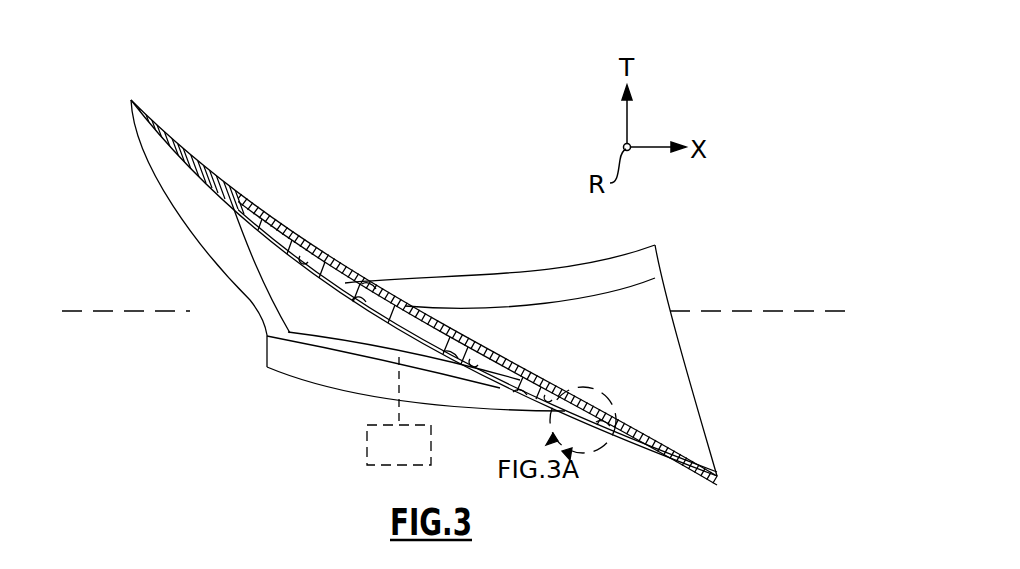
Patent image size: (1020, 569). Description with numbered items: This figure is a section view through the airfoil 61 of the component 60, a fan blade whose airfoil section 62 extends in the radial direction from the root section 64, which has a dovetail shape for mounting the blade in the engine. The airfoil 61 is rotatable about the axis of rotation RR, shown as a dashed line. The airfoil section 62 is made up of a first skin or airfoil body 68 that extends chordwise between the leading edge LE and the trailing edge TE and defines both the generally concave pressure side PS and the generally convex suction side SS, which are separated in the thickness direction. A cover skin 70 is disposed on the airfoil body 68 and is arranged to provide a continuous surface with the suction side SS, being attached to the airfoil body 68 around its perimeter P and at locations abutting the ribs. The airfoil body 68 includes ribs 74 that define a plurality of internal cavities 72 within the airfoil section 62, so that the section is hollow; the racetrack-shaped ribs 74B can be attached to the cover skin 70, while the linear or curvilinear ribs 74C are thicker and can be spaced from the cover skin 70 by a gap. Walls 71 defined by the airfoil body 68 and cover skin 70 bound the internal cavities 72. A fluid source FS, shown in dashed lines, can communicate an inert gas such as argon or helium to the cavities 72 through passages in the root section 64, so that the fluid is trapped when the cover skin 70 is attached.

The component 60 is at (170, 82).
The airfoil 61 is at (122, 123).
The airfoil section 62 is at (147, 189).
The root section 64 is at (255, 360).
The airfoil body 68 is at (231, 196).
The cover skin 70 is at (245, 237).
The walls 71 is at (311, 236).
The internal cavity 72 is at (318, 270).
The ribs 74 is at (360, 303).
The ribs 74B is at (367, 283).
The ribs 74C is at (447, 350).
The pressure side PS is at (291, 232).
The suction side SS is at (238, 272).
The leading edge LE is at (205, 246).
The trailing edge TE is at (700, 417).
The perimeter P is at (254, 304).
The axis of rotation RR is at (790, 311).
The fluid source FS is at (416, 459).